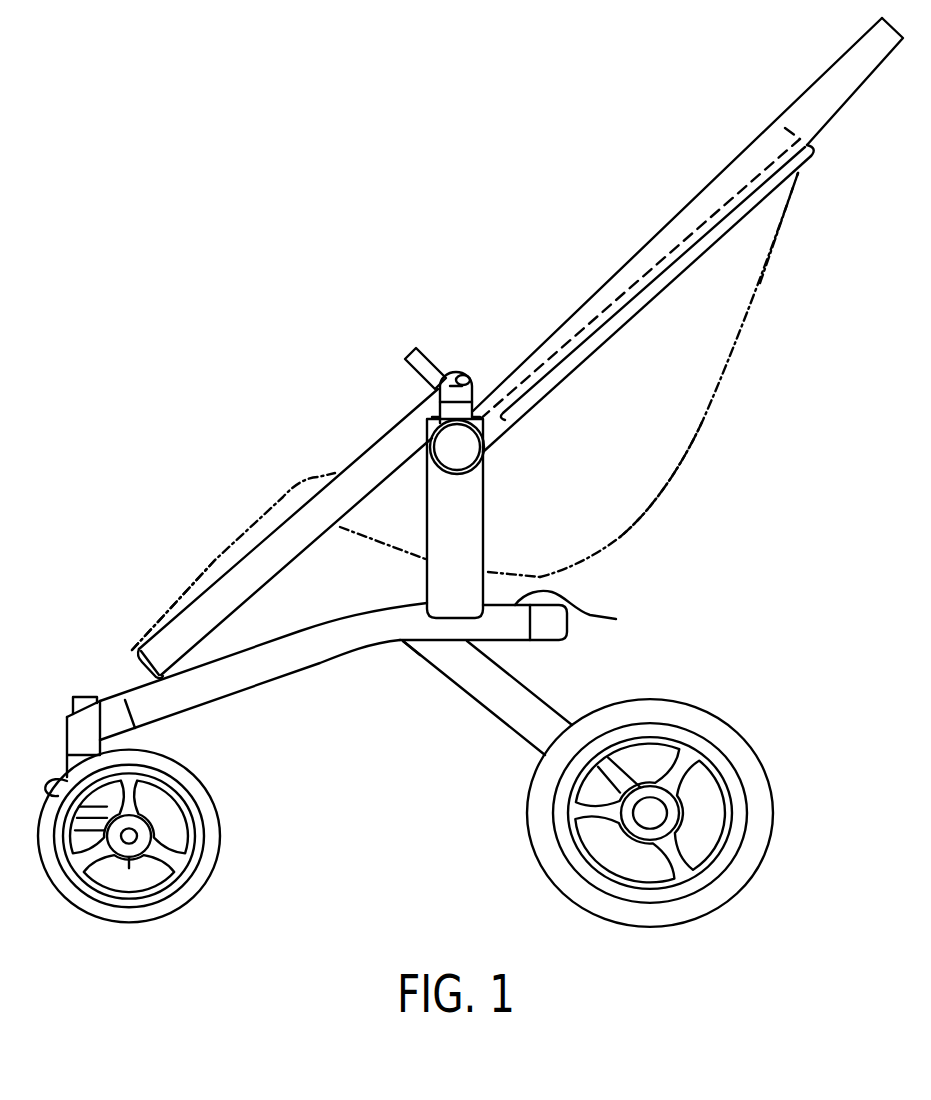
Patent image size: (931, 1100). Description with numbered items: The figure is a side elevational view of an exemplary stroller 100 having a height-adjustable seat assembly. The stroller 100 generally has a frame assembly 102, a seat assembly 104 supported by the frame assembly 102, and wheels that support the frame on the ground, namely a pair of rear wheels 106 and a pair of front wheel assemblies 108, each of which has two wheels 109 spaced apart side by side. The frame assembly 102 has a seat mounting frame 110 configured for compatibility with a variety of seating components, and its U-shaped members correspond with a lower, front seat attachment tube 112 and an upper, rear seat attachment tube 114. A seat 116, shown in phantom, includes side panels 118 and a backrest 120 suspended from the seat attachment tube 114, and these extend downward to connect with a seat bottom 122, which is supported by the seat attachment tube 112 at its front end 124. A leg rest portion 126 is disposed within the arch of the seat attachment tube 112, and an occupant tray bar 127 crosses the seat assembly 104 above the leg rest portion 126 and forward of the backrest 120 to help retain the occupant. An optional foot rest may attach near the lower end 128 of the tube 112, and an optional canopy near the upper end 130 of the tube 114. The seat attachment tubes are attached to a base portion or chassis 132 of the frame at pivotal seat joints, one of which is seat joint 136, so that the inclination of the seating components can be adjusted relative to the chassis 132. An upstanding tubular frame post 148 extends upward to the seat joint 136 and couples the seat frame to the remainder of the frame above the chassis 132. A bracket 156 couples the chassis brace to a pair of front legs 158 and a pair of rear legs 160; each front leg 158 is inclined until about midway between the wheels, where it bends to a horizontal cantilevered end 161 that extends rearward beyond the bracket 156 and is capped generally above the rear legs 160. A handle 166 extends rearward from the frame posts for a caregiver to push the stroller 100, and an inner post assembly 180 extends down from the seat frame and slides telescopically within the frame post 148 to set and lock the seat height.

The stroller 100 is at (415, 138).
The frame assembly 102 is at (326, 659).
The seat assembly 104 is at (760, 290).
The rear wheels 106 is at (768, 847).
The front wheel assembly 108 is at (203, 904).
The wheels 109 is at (56, 881).
The seat mounting frame 110 is at (397, 420).
The lower, front seat attachment tube 112 is at (199, 591).
The upper, rear seat attachment tube 114 is at (765, 197).
The seat 116 is at (692, 477).
The side panels 118 is at (578, 462).
The backrest 120 is at (721, 378).
The seat bottom 122 is at (544, 578).
The front end 124 is at (378, 547).
The leg rest portion 126 is at (278, 498).
The occupant tray bar 127 is at (412, 352).
The lower end 128 is at (136, 664).
The upper end 130 is at (812, 151).
The chassis 132 is at (411, 657).
The seat joint 136 is at (460, 375).
The frame post 148 is at (468, 526).
The bracket 156 is at (486, 644).
The front legs 158 is at (224, 693).
The rear legs 160 is at (503, 725).
The cantilevered end 161 is at (596, 613).
The handle 166 is at (846, 44).
The inner post assembly 180 is at (454, 370).